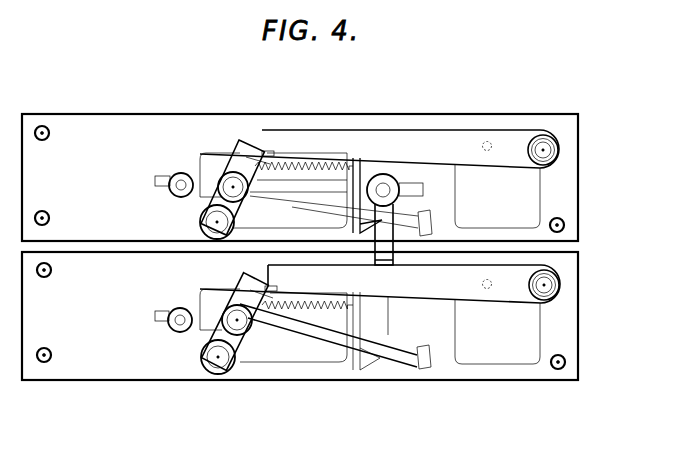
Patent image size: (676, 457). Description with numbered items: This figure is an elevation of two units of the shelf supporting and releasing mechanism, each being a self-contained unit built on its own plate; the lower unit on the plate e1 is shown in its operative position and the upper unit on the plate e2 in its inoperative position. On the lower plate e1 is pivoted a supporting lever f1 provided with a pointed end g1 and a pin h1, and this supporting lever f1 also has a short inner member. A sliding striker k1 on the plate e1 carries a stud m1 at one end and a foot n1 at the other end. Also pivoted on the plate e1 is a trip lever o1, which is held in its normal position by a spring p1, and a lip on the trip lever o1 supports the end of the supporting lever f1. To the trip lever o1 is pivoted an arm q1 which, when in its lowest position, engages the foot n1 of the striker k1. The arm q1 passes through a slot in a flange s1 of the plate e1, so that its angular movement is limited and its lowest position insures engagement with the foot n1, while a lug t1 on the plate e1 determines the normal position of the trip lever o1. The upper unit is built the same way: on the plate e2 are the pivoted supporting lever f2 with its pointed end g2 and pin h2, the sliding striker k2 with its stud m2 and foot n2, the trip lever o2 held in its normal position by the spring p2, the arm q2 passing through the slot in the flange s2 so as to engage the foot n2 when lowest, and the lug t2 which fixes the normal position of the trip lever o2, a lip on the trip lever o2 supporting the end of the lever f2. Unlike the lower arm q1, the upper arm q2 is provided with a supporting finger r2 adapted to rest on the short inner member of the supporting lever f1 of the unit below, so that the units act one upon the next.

The plate e2 is at (150, 178).
The supporting lever f2 is at (500, 143).
The pointed end g2 is at (261, 131).
The pin h2 is at (488, 141).
The sliding striker k2 is at (205, 209).
The stud m2 is at (176, 186).
The foot n2 is at (428, 221).
The trip lever o2 is at (228, 161).
The spring p2 is at (319, 170).
The arm q2 is at (310, 188).
The supporting finger r2 is at (400, 215).
The flange s2 is at (395, 172).
The lug t2 is at (269, 151).
The plate e1 is at (116, 371).
The supporting lever f1 is at (465, 292).
The pointed end g1 is at (267, 266).
The pin h1 is at (490, 290).
The sliding striker k1 is at (203, 342).
The stud m1 is at (177, 330).
The foot n1 is at (421, 368).
The trip lever o1 is at (242, 294).
The spring p1 is at (308, 303).
The arm q1 is at (337, 340).
The flange s1 is at (360, 310).
The lug t1 is at (258, 330).